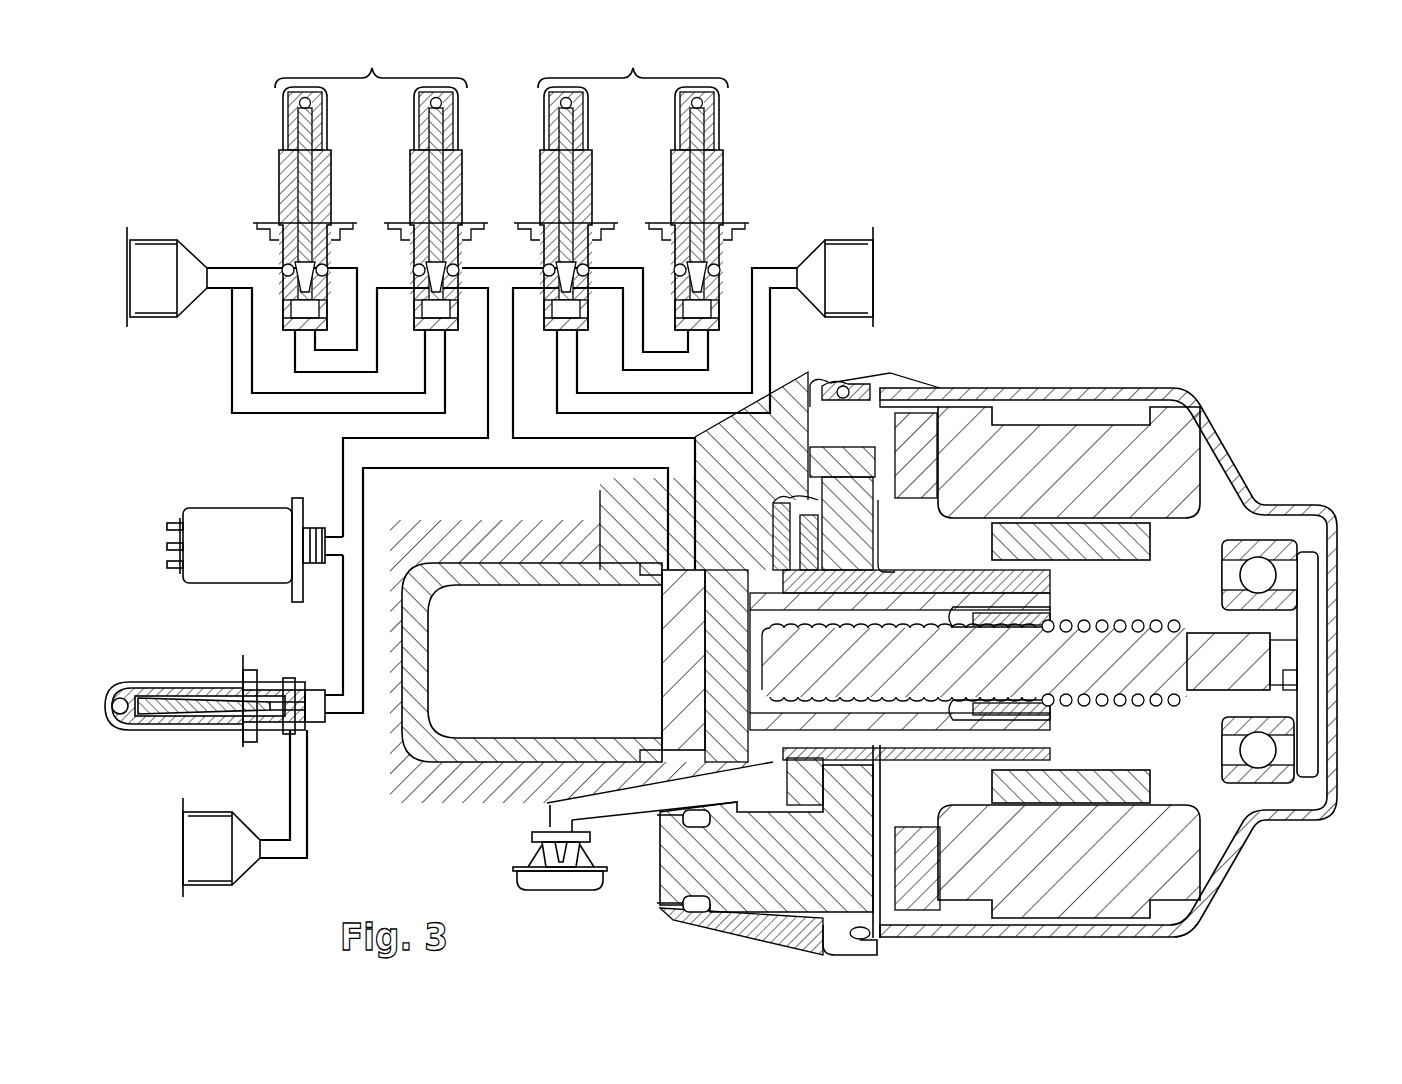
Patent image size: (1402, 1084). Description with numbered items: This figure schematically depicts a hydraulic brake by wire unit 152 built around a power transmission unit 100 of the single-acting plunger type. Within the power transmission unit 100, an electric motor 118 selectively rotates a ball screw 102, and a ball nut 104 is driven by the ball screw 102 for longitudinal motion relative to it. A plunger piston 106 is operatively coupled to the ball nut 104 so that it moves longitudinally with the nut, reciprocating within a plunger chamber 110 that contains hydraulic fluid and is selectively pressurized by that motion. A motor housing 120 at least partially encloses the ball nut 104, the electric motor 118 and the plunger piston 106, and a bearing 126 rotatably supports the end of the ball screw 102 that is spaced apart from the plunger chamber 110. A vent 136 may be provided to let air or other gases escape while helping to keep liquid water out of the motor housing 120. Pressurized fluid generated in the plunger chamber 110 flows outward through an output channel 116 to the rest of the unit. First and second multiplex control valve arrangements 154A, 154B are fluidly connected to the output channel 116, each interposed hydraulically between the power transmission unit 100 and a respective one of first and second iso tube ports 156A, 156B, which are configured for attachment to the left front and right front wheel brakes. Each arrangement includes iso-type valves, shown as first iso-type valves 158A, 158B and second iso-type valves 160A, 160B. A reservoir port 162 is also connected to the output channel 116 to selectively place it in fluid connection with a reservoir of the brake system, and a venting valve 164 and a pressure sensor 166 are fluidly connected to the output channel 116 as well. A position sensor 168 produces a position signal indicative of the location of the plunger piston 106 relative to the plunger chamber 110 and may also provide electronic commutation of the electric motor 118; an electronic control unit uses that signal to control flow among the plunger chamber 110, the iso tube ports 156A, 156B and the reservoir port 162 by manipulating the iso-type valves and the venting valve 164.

The power transmission unit 100 is at (1217, 365).
The ball screw 102 is at (1225, 668).
The ball nut 104 is at (1122, 725).
The plunger piston 106 is at (872, 722).
The plunger chamber 110 is at (558, 675).
The output channel 116 is at (688, 494).
The electric motor 118 is at (1080, 373).
The motor housing 120 is at (1131, 397).
The bearing 126 is at (1300, 578).
The vent 136 is at (556, 893).
The hydraulic brake by wire unit 152 is at (1087, 172).
The first multiplex control valve arrangement 154A is at (371, 63).
The second multiplex control valve arrangement 154B is at (633, 63).
The first iso tube port 156A is at (155, 260).
The second iso tube port 156B is at (846, 262).
The first iso-type valve 158A is at (458, 118).
The first iso-type valve 158B is at (592, 118).
The second iso-type valve 160A is at (282, 168).
The second iso-type valve 160B is at (722, 118).
The reservoir port 162 is at (214, 865).
The venting valve 164 is at (163, 688).
The pressure sensor 166 is at (248, 520).
The position sensor 168 is at (1315, 686).